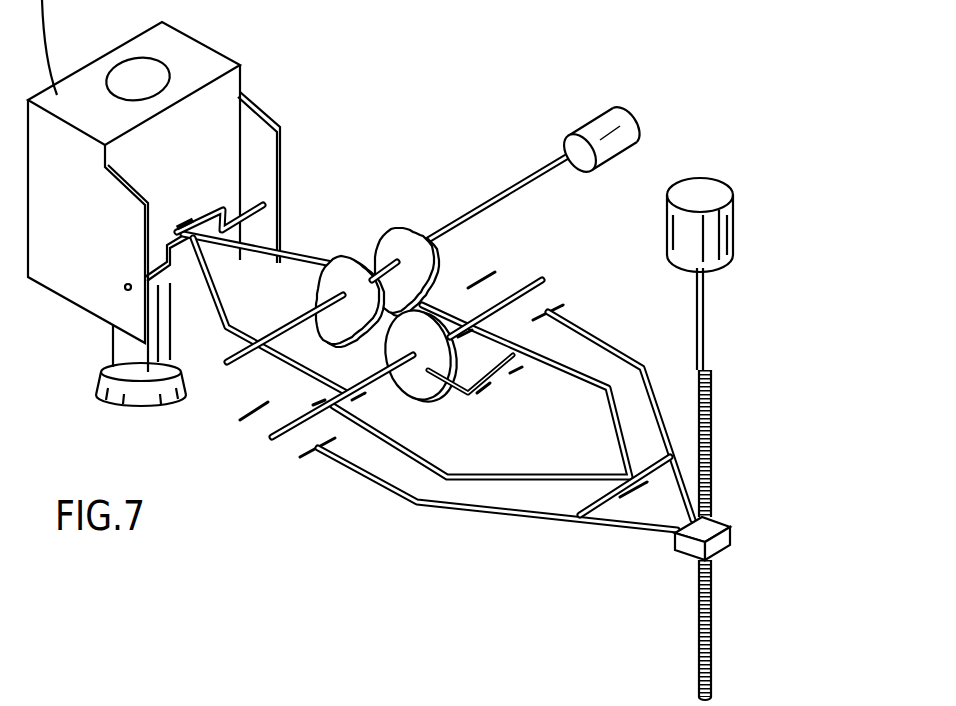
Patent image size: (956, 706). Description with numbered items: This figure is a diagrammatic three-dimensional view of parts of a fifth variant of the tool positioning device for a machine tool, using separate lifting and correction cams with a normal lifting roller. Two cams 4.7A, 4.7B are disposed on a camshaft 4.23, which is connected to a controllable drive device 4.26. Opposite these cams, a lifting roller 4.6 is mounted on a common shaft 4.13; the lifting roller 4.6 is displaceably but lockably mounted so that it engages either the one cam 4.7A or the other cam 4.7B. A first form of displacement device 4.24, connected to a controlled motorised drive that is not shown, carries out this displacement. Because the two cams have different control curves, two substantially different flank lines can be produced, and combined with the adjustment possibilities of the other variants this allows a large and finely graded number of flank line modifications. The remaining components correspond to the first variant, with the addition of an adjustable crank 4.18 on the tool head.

The adjustable crank 4.18 is at (213, 213).
The cam 4.7A is at (345, 257).
The cam 4.7B is at (407, 223).
The camshaft 4.23 is at (512, 190).
The controllable drive device 4.26 is at (602, 132).
The displacement device 4.24 is at (493, 373).
The lifting roller 4.6 is at (432, 392).
The common shaft 4.13 is at (283, 422).